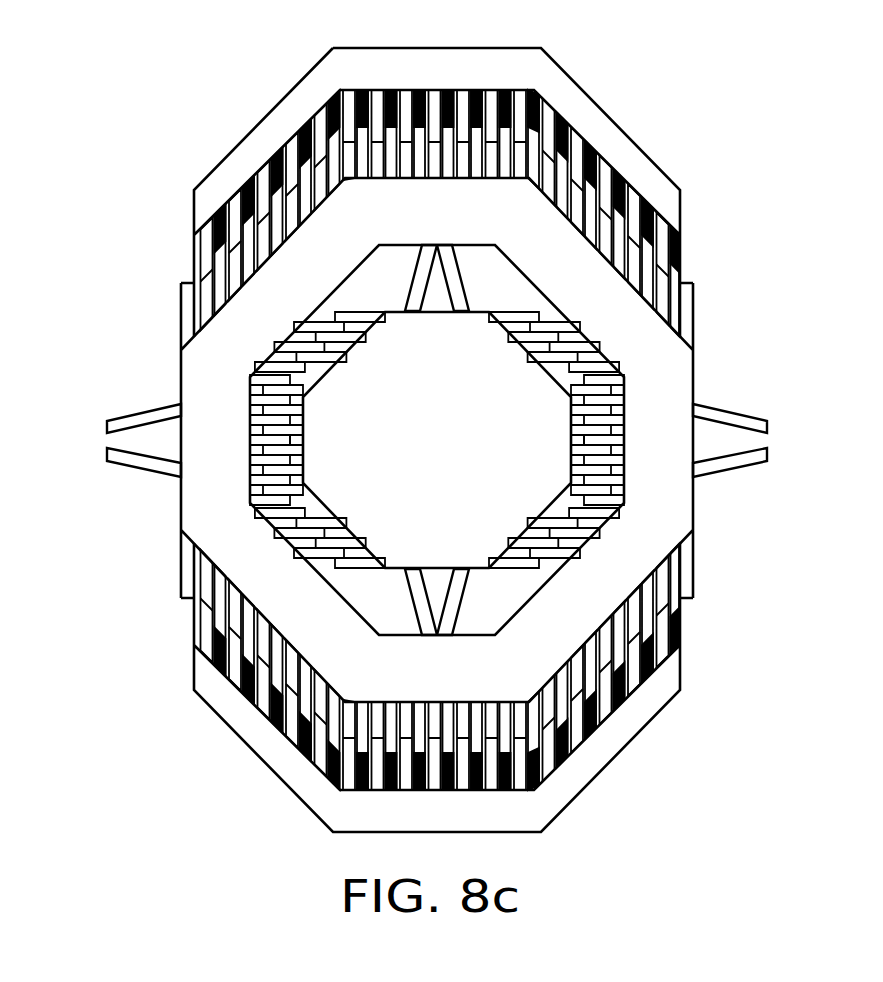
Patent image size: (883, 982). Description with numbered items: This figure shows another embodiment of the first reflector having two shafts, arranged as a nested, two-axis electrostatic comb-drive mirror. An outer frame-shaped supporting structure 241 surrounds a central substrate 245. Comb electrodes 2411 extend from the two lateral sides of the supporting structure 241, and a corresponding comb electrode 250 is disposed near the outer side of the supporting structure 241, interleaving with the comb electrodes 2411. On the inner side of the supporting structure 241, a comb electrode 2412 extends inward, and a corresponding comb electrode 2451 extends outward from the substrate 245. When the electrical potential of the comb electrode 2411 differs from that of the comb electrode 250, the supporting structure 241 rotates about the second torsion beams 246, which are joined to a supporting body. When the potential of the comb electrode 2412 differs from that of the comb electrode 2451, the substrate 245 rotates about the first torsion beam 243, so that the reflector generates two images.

The comb electrode 250 is at (593, 163).
The comb electrode 2411 is at (217, 273).
The supporting structure 241 is at (640, 333).
The first torsion beam 243 is at (455, 280).
The comb electrode 2412 is at (272, 355).
The comb electrode 2451 is at (300, 425).
The substrate 245 is at (527, 428).
The second torsion beam 246 is at (732, 415).